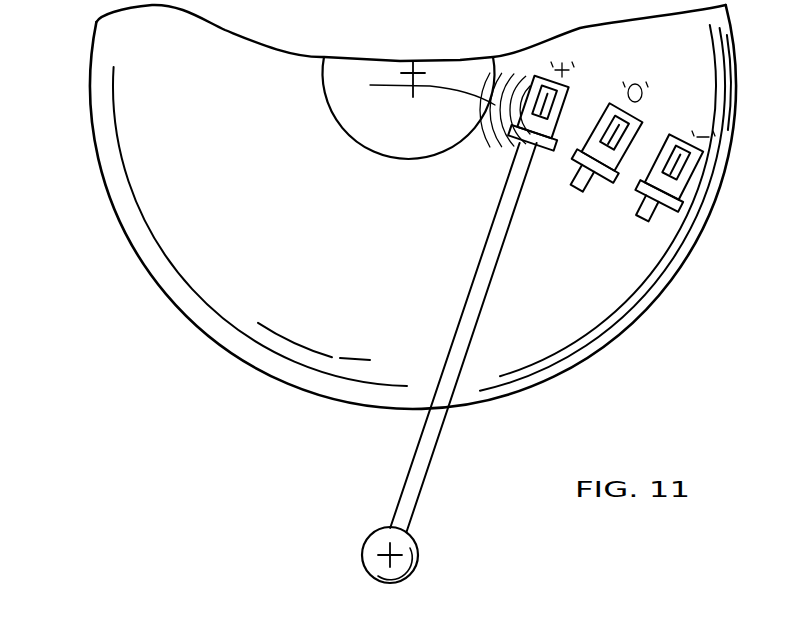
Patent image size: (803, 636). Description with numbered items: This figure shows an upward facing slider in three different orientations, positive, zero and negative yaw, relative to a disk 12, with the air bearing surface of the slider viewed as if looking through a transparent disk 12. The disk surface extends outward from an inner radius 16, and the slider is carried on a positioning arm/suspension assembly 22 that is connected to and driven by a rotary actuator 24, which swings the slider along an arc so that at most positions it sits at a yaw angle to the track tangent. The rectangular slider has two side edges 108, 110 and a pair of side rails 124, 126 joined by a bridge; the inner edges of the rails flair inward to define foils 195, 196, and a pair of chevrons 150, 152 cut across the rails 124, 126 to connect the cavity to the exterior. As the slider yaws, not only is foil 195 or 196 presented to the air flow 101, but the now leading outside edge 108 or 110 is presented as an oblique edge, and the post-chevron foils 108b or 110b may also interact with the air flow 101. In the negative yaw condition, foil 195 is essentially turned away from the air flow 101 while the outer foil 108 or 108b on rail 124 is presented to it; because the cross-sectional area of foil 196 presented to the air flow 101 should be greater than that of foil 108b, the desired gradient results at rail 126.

The disk 12 is at (673, 291).
The inner radius 16 is at (397, 57).
The positioning arm/suspension assembly 22 is at (416, 503).
The rotary actuator 24 is at (418, 557).
The air flow 101 is at (522, 143).
The side edge 108 is at (470, 131).
The post-chevron foil 108b is at (568, 100).
The side edge 110 is at (538, 172).
The post-chevron foil 110b is at (527, 72).
The side rail 124 is at (648, 186).
The side rail 126 is at (688, 180).
The chevron 150 is at (487, 108).
The chevron 152 is at (680, 190).
The foil 195 is at (507, 57).
The foil 196 is at (708, 166).